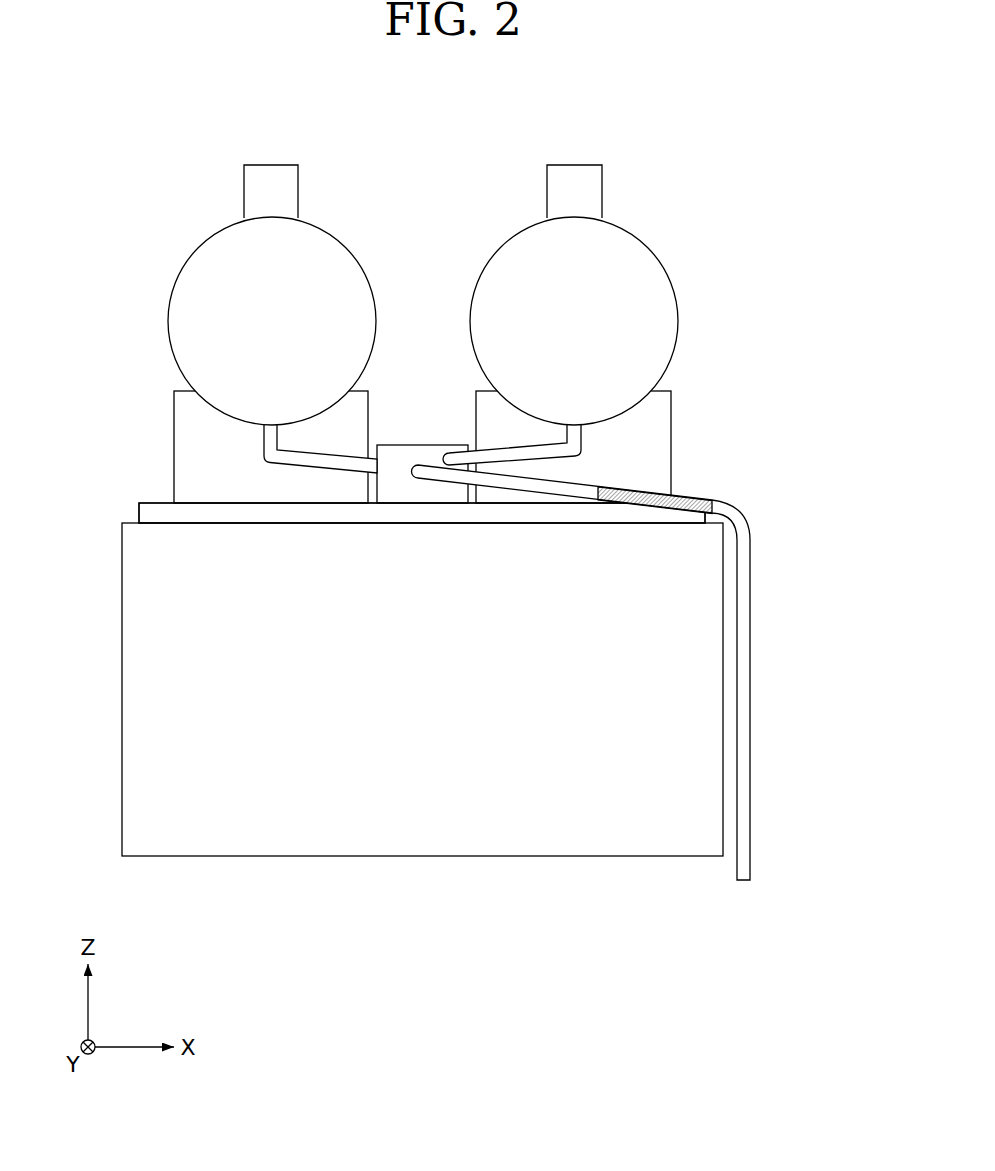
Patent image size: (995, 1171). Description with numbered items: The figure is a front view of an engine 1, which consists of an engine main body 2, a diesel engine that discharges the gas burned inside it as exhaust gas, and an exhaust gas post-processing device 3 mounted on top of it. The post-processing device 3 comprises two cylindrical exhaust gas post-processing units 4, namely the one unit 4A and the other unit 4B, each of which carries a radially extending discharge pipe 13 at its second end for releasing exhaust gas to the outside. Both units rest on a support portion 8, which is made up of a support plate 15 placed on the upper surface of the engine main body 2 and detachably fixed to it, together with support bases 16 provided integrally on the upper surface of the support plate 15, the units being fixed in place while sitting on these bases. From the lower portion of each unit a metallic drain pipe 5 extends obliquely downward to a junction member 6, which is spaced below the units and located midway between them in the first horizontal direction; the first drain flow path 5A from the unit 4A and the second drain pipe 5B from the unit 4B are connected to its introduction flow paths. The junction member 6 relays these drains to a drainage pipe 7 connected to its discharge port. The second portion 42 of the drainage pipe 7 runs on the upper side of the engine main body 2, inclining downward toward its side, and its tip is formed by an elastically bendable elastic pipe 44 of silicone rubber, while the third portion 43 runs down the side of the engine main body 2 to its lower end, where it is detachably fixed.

The engine 1 is at (688, 92).
The engine main body 2 is at (290, 823).
The exhaust gas post-processing device 3 is at (206, 170).
The exhaust gas post-processing unit 4 is at (446, 291).
The one exhaust gas post-processing unit 4A is at (194, 243).
The other exhaust gas post-processing unit 4B is at (650, 242).
The drain pipe 5 is at (422, 370).
The first drain flow path 5A is at (316, 452).
The second drain pipe 5B is at (518, 448).
The junction member 6 is at (427, 445).
The drainage pipe 7 is at (624, 668).
The support portion 8 is at (133, 503).
The discharge pipe 13 is at (285, 199).
The support plate 15 is at (287, 517).
The support base 16 is at (188, 418).
The second portion 42 is at (540, 495).
The third portion 43 is at (750, 625).
The elastic pipe 44 is at (652, 503).